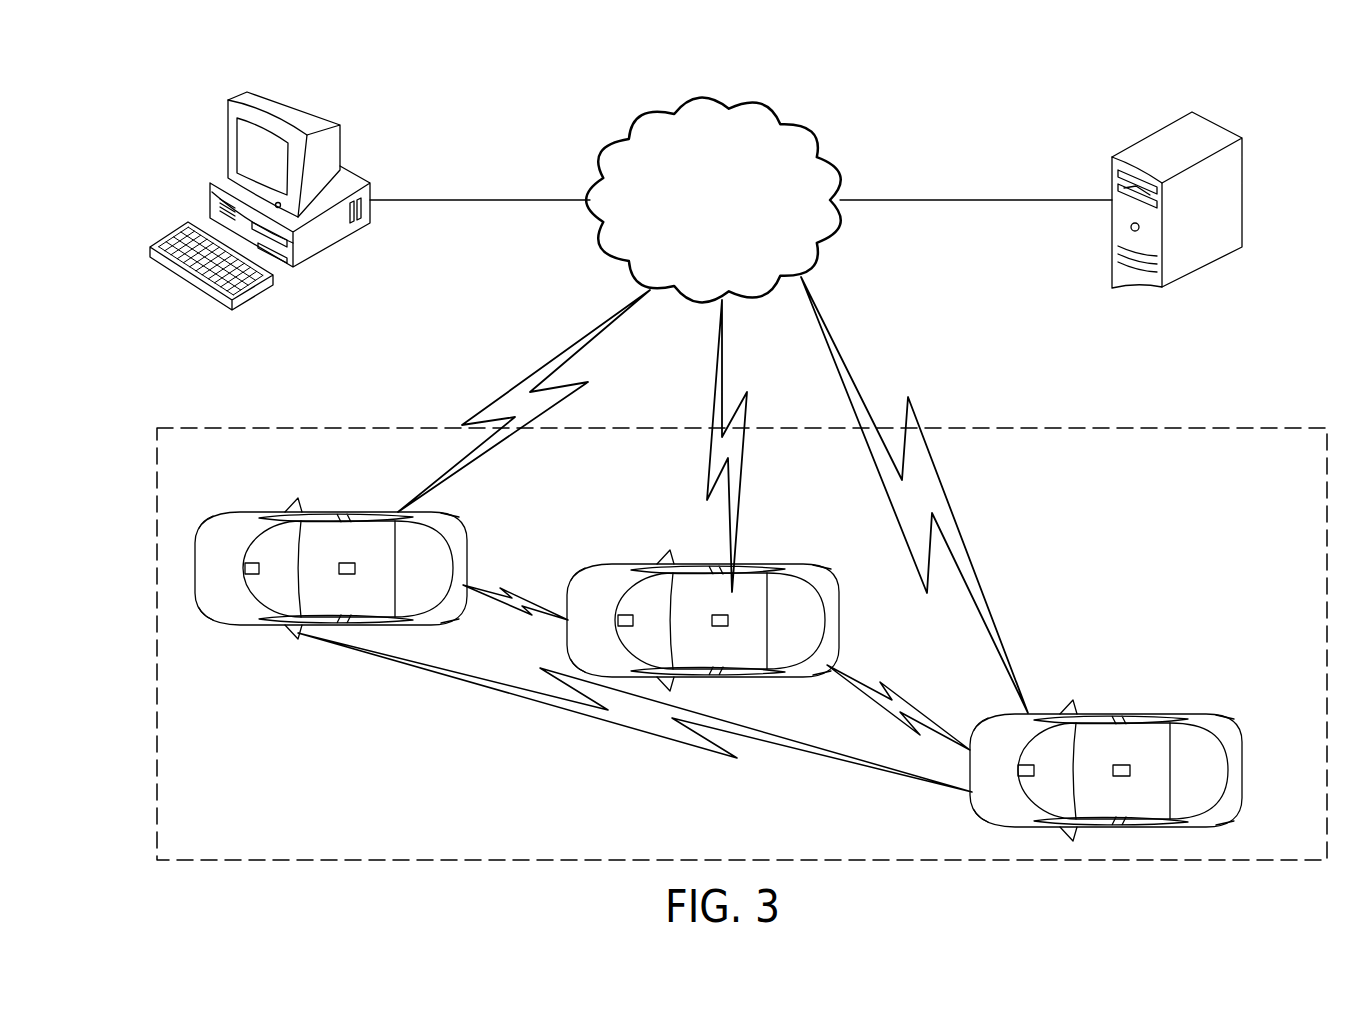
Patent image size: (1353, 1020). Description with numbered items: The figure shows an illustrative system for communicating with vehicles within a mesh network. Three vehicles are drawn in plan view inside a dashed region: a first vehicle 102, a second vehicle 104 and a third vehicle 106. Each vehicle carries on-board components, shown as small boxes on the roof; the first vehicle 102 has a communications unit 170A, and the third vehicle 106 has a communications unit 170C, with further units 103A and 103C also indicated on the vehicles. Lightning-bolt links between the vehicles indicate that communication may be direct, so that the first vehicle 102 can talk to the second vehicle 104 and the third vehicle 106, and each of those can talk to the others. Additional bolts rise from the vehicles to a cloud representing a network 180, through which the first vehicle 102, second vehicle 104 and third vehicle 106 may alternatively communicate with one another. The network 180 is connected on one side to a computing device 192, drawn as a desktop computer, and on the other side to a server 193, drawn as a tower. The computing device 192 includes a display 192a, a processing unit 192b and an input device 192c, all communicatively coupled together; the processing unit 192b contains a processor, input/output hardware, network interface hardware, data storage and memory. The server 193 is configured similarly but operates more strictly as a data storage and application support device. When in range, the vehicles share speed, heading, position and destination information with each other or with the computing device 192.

The first vehicle 102 is at (467, 542).
The second vehicle 104 is at (838, 595).
The third vehicle 106 is at (1240, 745).
The vehicle sensor unit of first vehicle 103A is at (252, 562).
The vehicle sensor unit 103C is at (623, 614).
The communications unit 170A is at (346, 562).
The communications unit 170C is at (720, 614).
The network 180 is at (803, 130).
The computing device 192 is at (334, 96).
The display 192a is at (228, 110).
The processing unit 192b is at (317, 240).
The input device 192c is at (243, 295).
The server 193 is at (1234, 114).